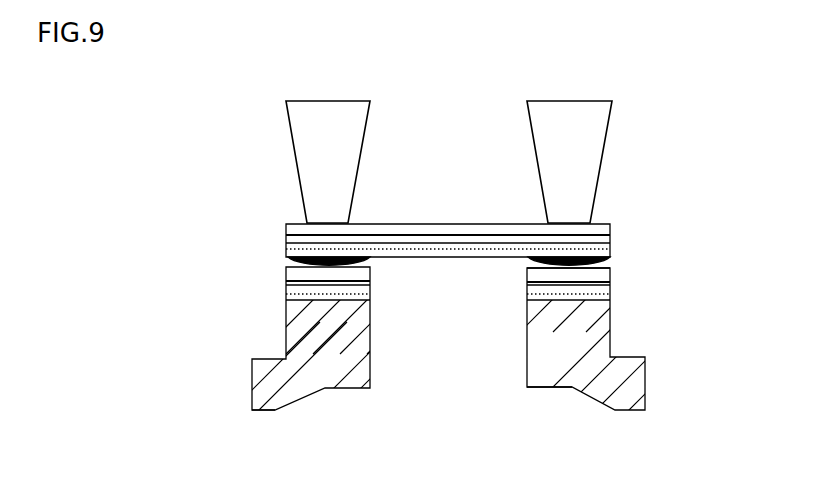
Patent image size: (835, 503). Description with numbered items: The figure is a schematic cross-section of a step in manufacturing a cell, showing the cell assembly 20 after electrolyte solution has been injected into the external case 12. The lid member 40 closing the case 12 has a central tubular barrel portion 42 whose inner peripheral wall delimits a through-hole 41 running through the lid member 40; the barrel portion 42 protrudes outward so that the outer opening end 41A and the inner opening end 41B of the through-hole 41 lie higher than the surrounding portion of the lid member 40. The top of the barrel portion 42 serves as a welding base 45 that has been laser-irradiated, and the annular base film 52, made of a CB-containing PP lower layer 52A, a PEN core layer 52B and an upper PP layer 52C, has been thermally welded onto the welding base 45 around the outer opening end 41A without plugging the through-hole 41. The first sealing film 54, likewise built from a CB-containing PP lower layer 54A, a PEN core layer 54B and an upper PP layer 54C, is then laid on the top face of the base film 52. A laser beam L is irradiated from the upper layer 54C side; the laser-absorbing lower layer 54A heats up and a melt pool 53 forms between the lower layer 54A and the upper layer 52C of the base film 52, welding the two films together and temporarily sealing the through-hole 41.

The laser beam L is at (291, 130).
The cell assembly 20 is at (680, 160).
The first sealing film 54 is at (380, 236).
The lower layer 54A is at (287, 252).
The core layer 54B is at (287, 243).
The upper layer 54C is at (287, 227).
The melt pool 53 is at (287, 263).
The welding base 45 is at (527, 294).
The external case 12 is at (212, 406).
The through-hole 41 is at (346, 373).
The outer opening end 41A is at (371, 300).
The inner opening end 41B is at (527, 388).
The lid member 40 is at (260, 418).
The barrel portion 42 is at (611, 333).
The base film 52 is at (637, 278).
The lower layer 52A is at (611, 293).
The core layer 52B is at (611, 283).
The upper layer 52C is at (611, 271).